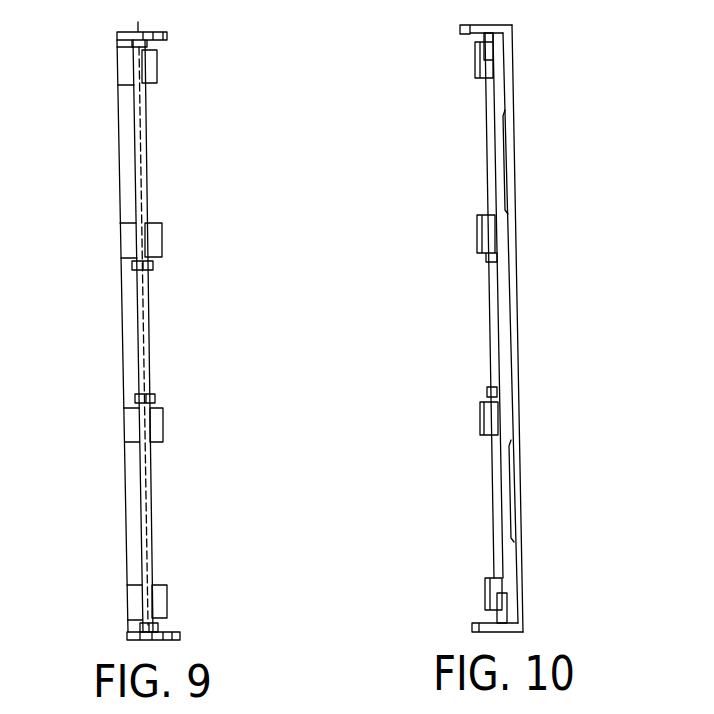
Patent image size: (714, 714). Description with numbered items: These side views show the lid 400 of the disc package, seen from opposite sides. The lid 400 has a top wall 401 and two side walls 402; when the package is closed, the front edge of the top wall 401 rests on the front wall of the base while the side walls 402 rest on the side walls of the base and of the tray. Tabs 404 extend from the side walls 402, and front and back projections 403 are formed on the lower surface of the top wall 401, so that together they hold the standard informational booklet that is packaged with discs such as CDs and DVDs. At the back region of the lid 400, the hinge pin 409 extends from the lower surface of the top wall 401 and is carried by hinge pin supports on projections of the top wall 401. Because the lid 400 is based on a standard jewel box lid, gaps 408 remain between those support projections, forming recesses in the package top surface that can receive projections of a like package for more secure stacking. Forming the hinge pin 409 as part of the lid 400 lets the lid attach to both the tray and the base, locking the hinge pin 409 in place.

In FIG. 9, the lid 400 is at (178, 479).
In FIG. 10, the lid 400 is at (437, 475).
In FIG. 9, the top wall 401 is at (120, 293).
In FIG. 10, the top wall 401 is at (512, 298).
In FIG. 9, the side walls 402 is at (165, 38).
In FIG. 10, the side walls 402 is at (461, 38).
In FIG. 10, the front and back projections 403 is at (503, 162).
In FIG. 10, the tabs 404 is at (475, 72).
In FIG. 9, the gaps 408 is at (176, 306).
In FIG. 10, the gaps 408 is at (460, 301).
In FIG. 9, the hinge pin 409 is at (150, 330).
In FIG. 10, the hinge pin 409 is at (495, 340).